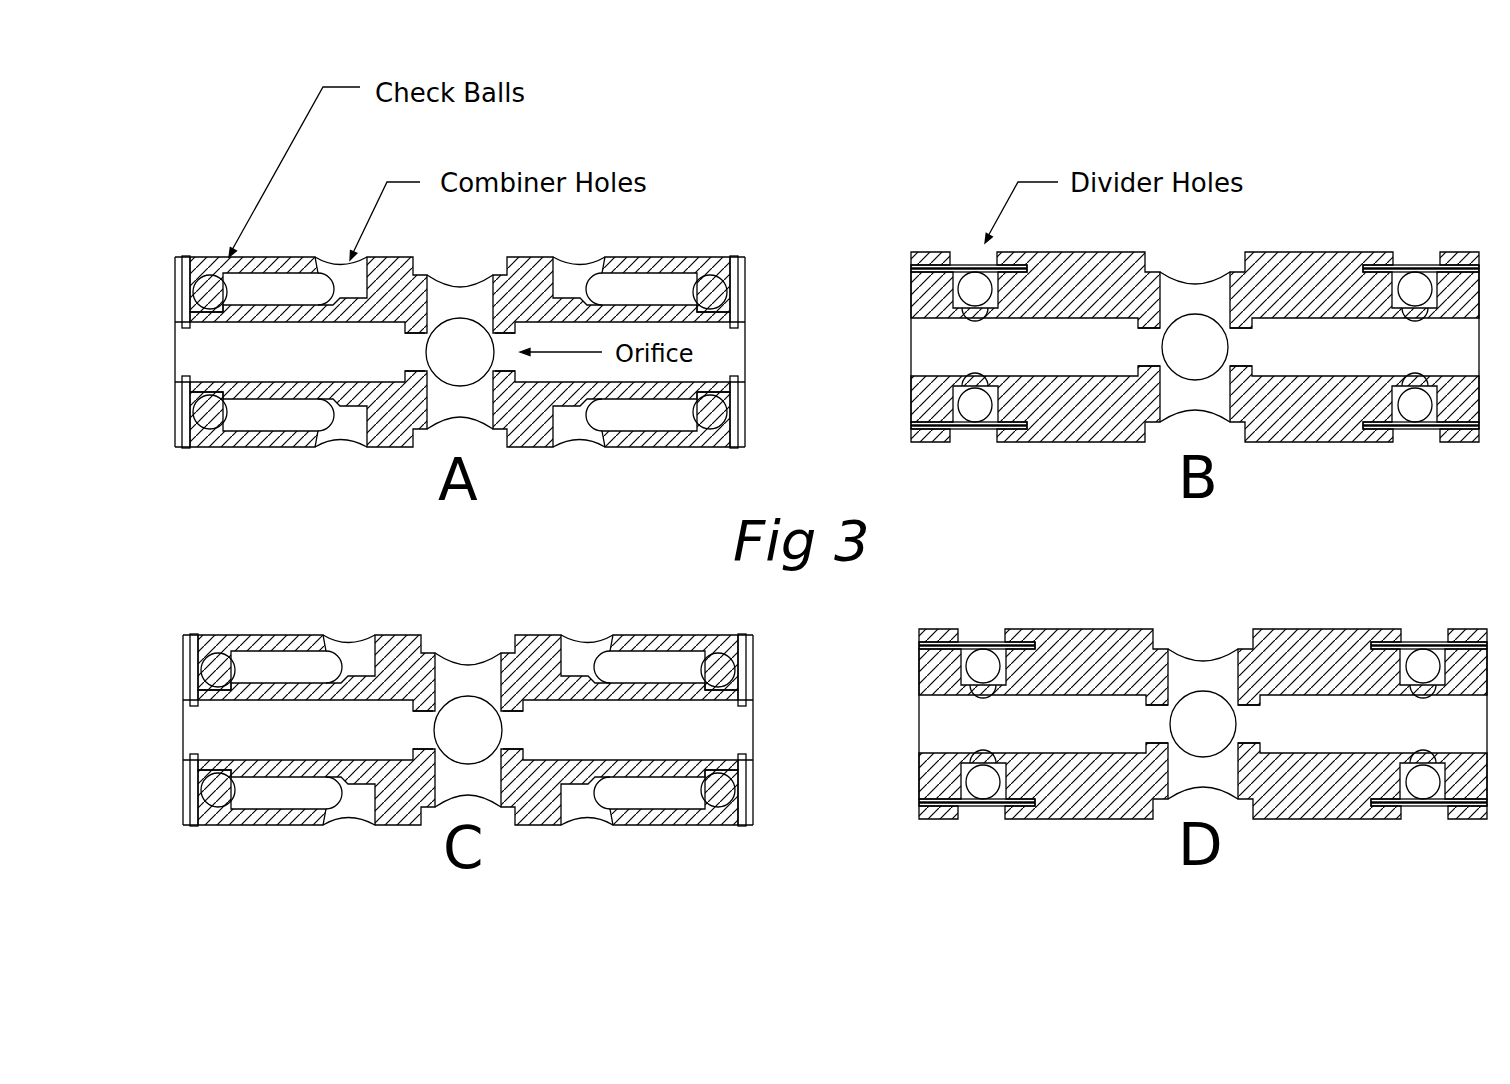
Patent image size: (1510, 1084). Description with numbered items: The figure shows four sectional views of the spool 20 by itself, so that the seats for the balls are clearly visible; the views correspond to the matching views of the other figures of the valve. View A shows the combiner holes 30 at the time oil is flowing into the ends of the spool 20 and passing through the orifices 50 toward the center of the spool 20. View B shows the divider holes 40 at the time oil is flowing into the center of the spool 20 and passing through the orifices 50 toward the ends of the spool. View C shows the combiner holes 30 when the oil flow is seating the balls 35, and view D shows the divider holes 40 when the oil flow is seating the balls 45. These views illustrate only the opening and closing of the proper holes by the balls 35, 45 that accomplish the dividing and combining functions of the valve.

The spool 20 is at (758, 272).
The combiner holes 30 is at (357, 263).
The balls 35 is at (209, 281).
The divider holes 40 is at (966, 262).
The balls 45 is at (1002, 257).
The orifices 50 is at (410, 350).